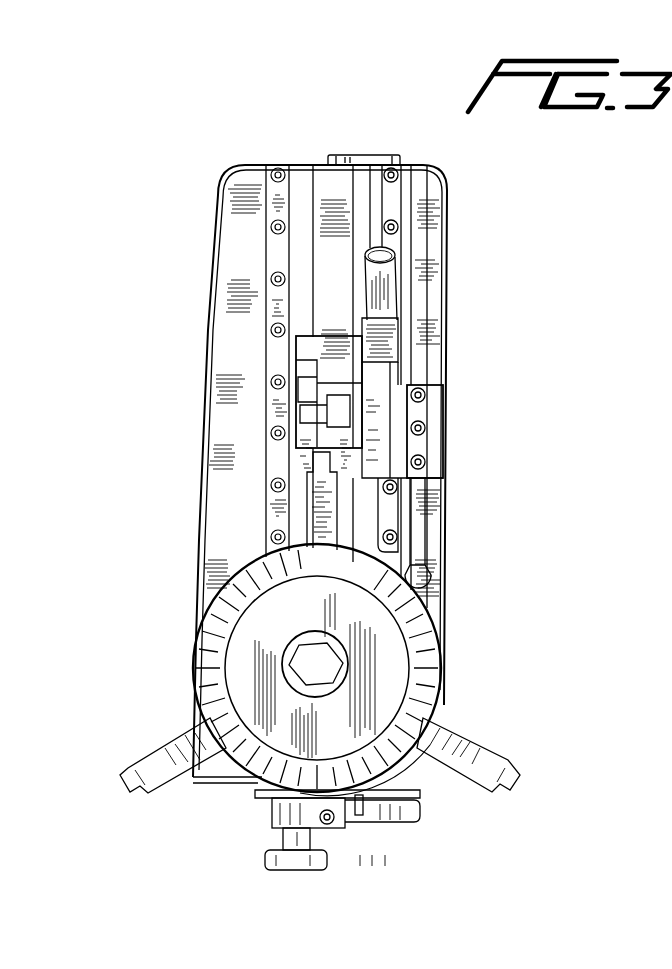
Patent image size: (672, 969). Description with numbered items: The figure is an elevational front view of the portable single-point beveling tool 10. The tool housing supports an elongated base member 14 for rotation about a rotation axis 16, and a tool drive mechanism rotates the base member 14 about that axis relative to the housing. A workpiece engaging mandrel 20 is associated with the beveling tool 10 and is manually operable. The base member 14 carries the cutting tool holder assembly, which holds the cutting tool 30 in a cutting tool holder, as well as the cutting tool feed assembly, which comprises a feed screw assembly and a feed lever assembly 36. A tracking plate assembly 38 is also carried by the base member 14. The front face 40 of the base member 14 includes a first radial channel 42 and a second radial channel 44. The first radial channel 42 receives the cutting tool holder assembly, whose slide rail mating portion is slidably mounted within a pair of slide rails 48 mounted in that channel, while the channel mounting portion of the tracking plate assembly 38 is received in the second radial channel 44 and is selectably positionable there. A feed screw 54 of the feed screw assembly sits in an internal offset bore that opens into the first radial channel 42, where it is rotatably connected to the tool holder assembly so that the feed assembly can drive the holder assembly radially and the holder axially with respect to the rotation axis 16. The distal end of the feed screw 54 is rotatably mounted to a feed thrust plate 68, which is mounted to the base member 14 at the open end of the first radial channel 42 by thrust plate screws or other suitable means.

The beveling tool 10 is at (394, 474).
The base member 14 is at (445, 543).
The rotation axis 16 is at (323, 658).
The workpiece engaging mandrel 20 is at (487, 745).
The cutting tool 30 is at (655, 569).
The feed lever assembly 36 is at (266, 824).
The tracking plate assembly 38 is at (406, 373).
The front face 40 is at (232, 450).
The first radial channel 42 is at (335, 265).
The second radial channel 44 is at (408, 197).
The slide rails 48 is at (278, 176).
The feed screw 54 is at (348, 195).
The feed thrust plate 68 is at (398, 155).